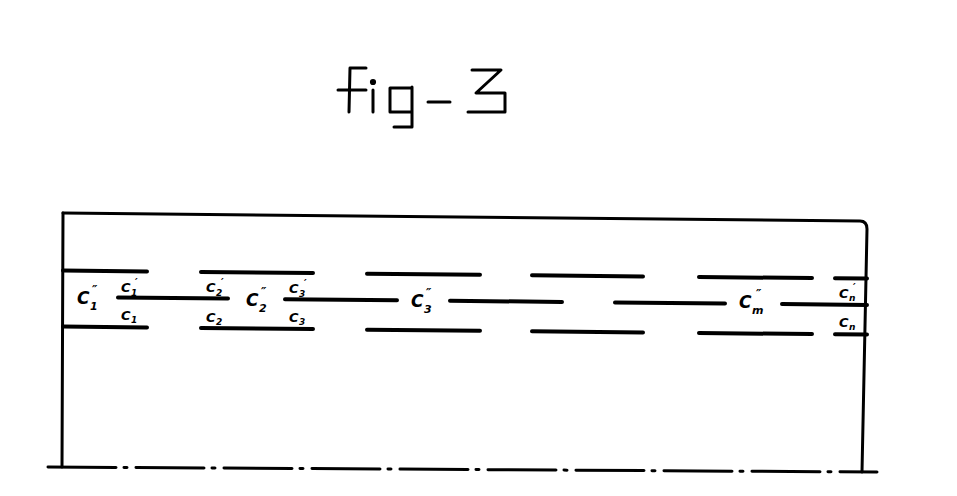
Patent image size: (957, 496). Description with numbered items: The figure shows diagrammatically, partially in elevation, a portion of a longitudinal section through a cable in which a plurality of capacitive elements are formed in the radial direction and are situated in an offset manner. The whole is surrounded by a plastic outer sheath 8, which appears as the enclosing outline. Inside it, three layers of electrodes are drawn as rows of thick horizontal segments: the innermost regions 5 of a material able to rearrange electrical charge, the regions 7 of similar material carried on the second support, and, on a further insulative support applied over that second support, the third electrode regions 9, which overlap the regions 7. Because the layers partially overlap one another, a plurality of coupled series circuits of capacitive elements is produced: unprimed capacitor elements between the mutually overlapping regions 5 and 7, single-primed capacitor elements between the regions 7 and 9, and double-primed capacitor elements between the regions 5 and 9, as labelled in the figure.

The regions 5 is at (102, 329).
The regions 7 is at (168, 297).
The outer sheath 8 is at (743, 228).
The third electrode regions 9 is at (115, 270).